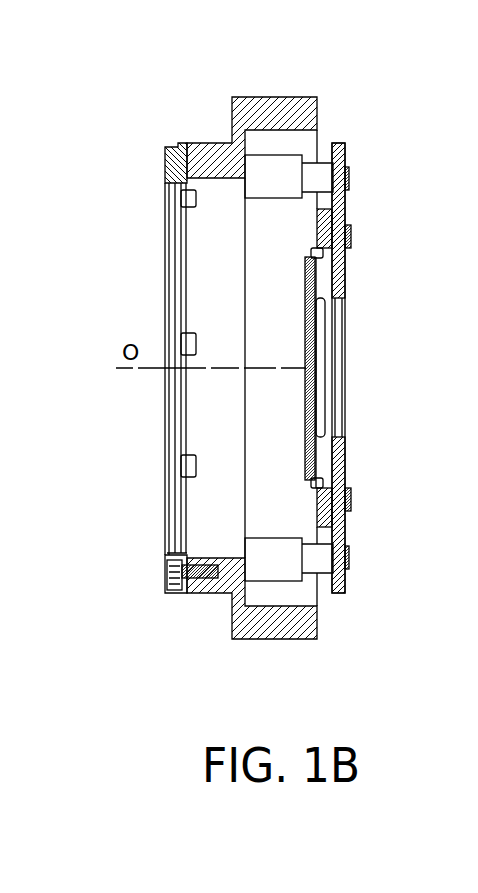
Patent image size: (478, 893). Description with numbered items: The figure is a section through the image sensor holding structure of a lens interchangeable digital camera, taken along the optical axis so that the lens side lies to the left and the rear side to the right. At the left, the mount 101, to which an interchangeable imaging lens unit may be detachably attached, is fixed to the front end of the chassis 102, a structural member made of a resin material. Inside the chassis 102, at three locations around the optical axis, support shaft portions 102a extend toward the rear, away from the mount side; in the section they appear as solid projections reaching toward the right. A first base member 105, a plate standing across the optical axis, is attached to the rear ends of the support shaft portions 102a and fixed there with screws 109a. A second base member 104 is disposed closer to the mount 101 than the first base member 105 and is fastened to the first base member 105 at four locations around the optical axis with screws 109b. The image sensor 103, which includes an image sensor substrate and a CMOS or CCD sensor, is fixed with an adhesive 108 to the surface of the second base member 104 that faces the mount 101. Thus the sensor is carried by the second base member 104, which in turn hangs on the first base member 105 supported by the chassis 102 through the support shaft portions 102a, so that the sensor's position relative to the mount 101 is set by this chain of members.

The mount 101 is at (170, 147).
The chassis 102 is at (257, 118).
The support shaft portion 102a is at (268, 177).
The image sensor 103 is at (317, 327).
The second base member 104 is at (330, 216).
The first base member 105 is at (342, 143).
The adhesive 108 is at (318, 258).
The screw 109a is at (349, 178).
The screw 109b is at (350, 236).